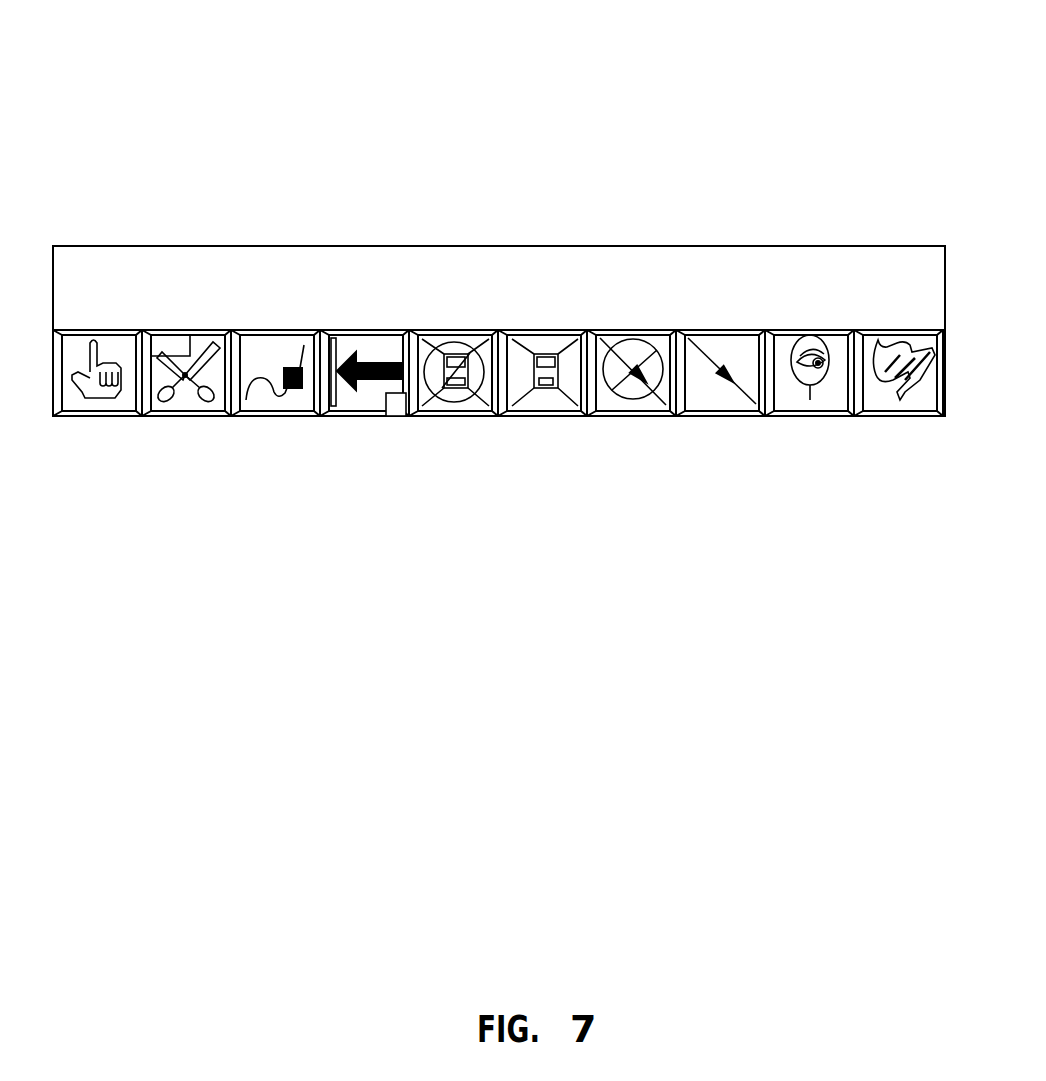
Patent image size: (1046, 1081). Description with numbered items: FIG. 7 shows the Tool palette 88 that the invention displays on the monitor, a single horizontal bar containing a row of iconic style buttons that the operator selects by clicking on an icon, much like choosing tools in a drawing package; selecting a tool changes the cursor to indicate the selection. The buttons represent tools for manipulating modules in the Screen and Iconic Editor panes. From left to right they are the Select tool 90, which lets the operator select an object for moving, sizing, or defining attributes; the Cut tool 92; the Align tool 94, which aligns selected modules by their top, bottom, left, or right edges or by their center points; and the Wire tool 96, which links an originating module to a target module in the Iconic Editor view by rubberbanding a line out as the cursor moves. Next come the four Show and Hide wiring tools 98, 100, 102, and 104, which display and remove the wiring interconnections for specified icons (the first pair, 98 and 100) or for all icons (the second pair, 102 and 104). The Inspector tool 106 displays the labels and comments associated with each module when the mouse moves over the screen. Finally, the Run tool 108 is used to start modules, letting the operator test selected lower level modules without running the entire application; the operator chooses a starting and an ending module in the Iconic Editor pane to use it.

The tool palette 88 is at (415, 215).
The Select tool 90 is at (92, 330).
The Cut tool 92 is at (181, 330).
The Align tool 94 is at (270, 330).
The Wire tool 96 is at (367, 330).
The Show wiring tool 98 is at (455, 330).
The Hide wiring tool 100 is at (545, 330).
The Show wiring tool 102 is at (635, 330).
The Hide wiring tool 104 is at (728, 330).
The Inspector tool 106 is at (808, 330).
The Run tool 108 is at (883, 330).